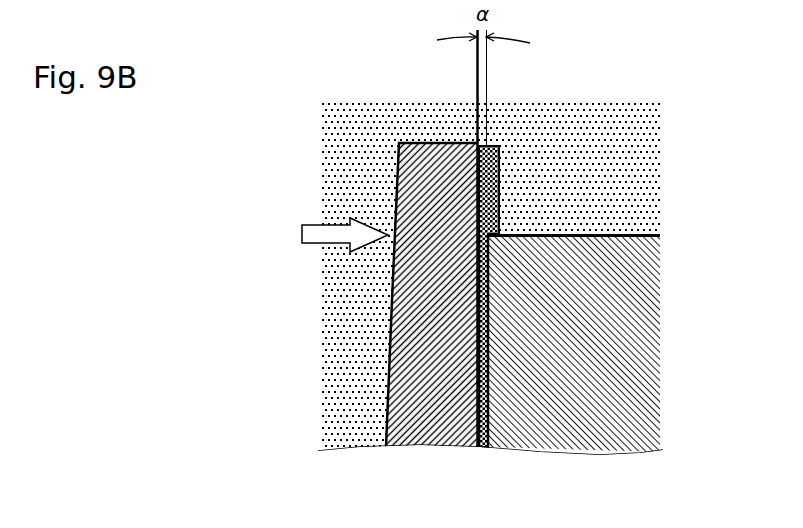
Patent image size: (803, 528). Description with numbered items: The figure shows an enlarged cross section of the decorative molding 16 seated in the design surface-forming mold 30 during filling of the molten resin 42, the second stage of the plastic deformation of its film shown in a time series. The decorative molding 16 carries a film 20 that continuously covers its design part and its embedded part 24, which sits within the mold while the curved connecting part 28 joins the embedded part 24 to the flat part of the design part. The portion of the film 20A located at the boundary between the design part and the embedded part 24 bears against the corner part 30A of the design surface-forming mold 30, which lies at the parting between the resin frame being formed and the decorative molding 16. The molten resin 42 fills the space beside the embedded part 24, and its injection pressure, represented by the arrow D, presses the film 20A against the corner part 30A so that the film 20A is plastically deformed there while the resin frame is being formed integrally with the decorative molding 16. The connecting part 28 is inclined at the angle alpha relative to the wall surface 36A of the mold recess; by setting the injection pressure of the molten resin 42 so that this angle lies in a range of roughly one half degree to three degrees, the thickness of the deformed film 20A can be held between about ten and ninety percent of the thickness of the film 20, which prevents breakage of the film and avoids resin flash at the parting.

The decorative molding 16 is at (318, 148).
The molten resin 42 is at (608, 179).
The embedded part 24 is at (425, 188).
The connecting part 28 is at (432, 398).
The film 20 is at (500, 170).
The design surface-forming mold 30 is at (590, 369).
The corner part 30A is at (488, 236).
The wall surface 36A is at (482, 300).
The film at boundary 20A is at (493, 237).
The arrow D is at (332, 235).